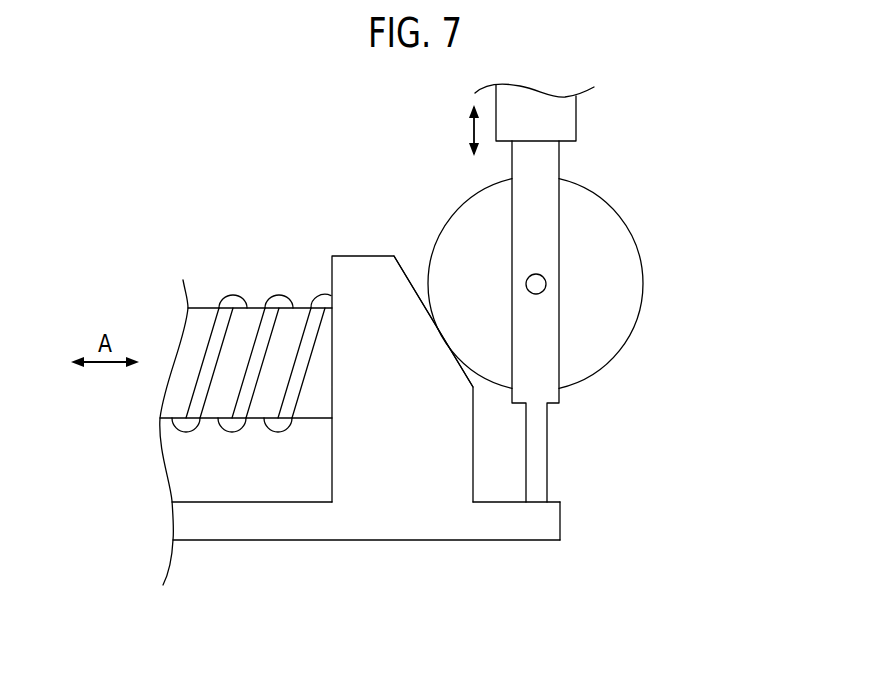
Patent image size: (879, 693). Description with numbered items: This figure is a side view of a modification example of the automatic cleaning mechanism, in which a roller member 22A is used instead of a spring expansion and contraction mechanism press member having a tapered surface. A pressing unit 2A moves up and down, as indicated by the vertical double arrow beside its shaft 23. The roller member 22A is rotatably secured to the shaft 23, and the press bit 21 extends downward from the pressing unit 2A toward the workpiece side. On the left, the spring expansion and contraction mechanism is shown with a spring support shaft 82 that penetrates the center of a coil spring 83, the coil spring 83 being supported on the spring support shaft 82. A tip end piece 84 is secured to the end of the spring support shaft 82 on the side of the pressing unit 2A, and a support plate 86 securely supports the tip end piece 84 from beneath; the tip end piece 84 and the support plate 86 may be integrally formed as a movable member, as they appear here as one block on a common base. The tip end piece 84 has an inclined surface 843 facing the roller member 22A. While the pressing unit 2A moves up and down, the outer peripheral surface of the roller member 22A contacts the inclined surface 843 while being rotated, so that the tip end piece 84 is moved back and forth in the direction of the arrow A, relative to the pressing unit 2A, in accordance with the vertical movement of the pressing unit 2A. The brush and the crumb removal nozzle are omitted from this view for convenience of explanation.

The spring support shaft 82 is at (207, 308).
The coil spring 83 is at (234, 296).
The tip end piece 84 is at (357, 268).
The inclined surface 843 is at (418, 272).
The support plate 86 is at (215, 525).
The pressing unit 2A is at (667, 201).
The press bit 21 is at (549, 457).
The roller member 22A is at (650, 316).
The shaft 23 is at (578, 114).